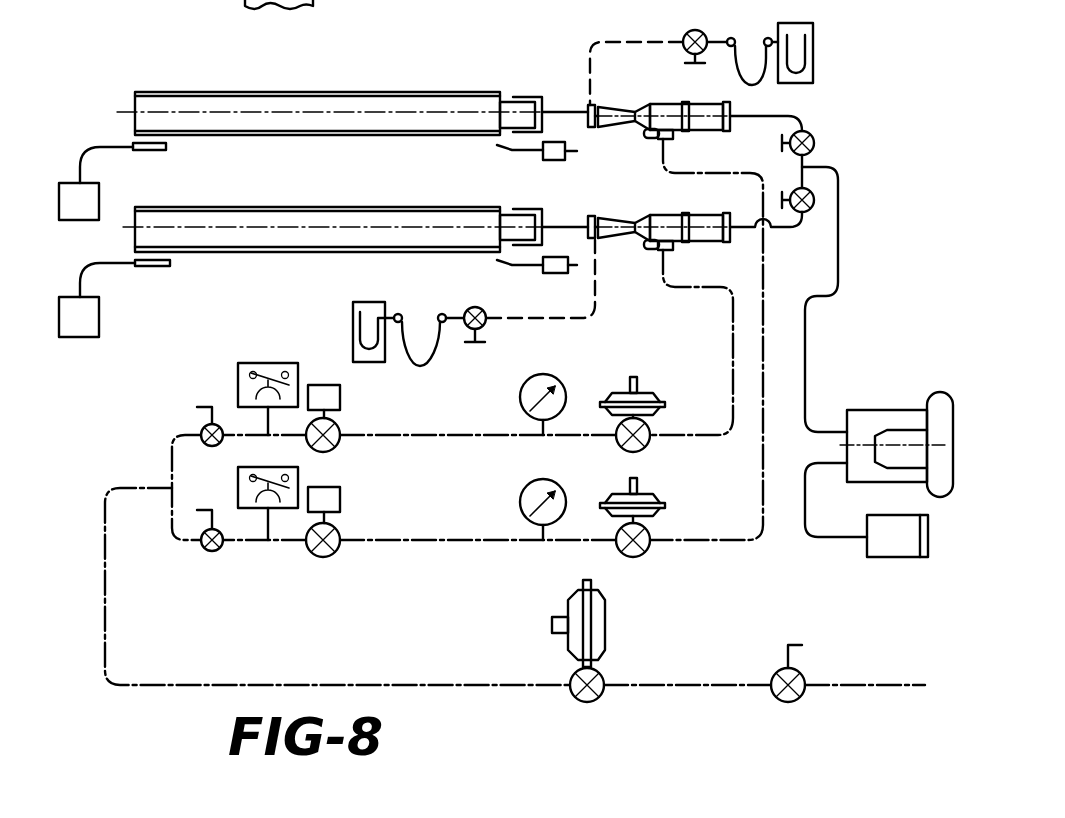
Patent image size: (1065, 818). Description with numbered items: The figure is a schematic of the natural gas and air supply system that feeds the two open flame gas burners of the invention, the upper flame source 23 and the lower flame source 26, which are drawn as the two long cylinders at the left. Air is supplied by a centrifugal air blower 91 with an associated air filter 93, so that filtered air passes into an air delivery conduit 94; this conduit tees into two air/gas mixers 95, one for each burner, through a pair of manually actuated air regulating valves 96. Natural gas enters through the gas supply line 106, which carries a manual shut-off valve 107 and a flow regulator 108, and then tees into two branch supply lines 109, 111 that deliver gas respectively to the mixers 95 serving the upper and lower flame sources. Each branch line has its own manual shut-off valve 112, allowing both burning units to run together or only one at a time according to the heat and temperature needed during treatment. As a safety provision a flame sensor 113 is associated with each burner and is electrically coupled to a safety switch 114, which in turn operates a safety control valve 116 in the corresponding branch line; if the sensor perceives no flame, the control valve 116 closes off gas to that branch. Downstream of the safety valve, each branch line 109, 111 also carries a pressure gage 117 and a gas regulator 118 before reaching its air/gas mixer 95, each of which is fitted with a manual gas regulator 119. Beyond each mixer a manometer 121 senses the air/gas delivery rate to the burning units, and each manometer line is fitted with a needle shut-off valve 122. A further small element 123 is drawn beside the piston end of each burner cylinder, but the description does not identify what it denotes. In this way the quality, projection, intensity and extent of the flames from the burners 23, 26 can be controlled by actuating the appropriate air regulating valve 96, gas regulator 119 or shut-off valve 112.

The upper flame source 23 is at (368, 74).
The lower flame source 26 is at (336, 210).
The centrifugal air blower 91 is at (880, 416).
The air filter 93 is at (865, 557).
The air delivery conduit 94 is at (841, 281).
The air/gas mixer 95 is at (658, 105).
The air regulating valve 96 is at (814, 143).
The gas supply line 106 is at (889, 648).
The manual shut-off valve 107 is at (768, 698).
The flow regulator 108 is at (572, 596).
The branch supply line 109 is at (448, 437).
The branch supply line 111 is at (413, 542).
The manual shut-off valve 112 is at (221, 445).
The flame sensor 113 is at (108, 146).
The safety switch 114 is at (293, 363).
The safety control valve 116 is at (340, 398).
The pressure gage 117 is at (558, 374).
The gas regulator 118 is at (663, 403).
The manual gas regulator 119 is at (648, 140).
The manometer 121 is at (814, 47).
The needle shut-off valve 122 is at (690, 29).
The sensor 123 is at (557, 161).